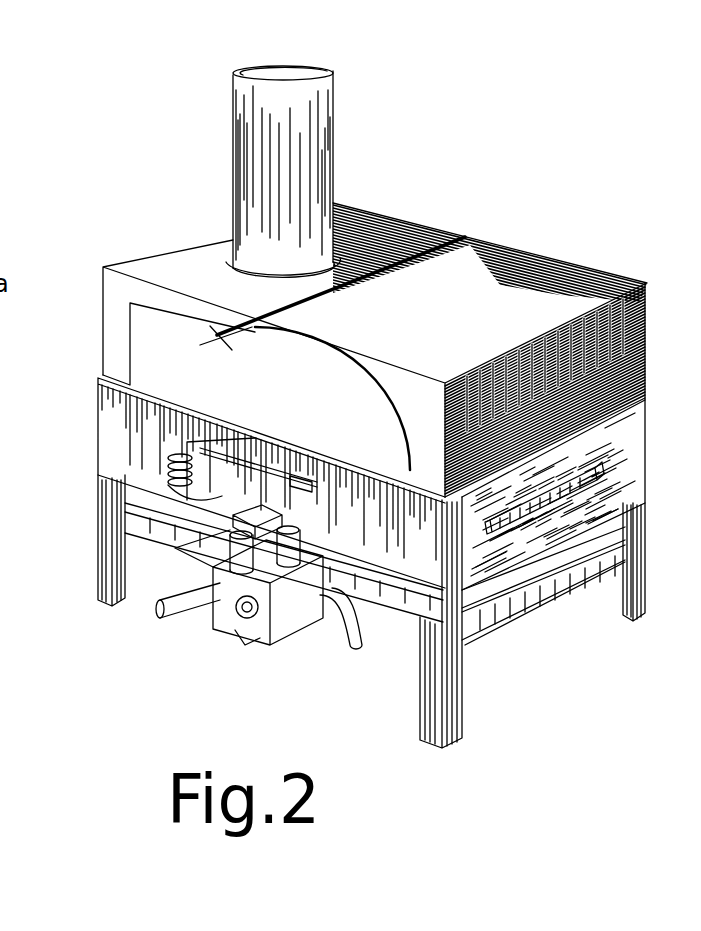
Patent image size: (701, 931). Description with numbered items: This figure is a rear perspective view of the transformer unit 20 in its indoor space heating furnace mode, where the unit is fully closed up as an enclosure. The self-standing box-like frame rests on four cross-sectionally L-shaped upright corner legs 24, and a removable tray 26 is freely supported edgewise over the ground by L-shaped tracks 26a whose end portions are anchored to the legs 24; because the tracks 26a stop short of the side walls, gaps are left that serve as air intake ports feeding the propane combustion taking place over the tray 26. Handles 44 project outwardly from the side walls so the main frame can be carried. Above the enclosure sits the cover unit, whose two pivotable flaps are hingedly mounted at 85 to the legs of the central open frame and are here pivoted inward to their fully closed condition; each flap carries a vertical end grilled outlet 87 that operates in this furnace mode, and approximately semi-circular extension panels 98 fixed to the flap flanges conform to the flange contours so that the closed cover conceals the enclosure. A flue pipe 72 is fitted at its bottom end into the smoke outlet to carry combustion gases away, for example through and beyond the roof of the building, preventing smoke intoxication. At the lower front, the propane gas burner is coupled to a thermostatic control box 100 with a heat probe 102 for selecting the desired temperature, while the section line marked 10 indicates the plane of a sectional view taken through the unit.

The section line 10- 10 is at (397, 183).
The transformer unit 20 is at (548, 612).
The corner legs 24 is at (102, 593).
The removable tray 26 is at (622, 543).
The tracks 26a is at (495, 637).
The handles 44 is at (610, 470).
The flue pipe 72 is at (253, 167).
The hinge mounting 85 is at (643, 393).
The grilled outlet 87 is at (643, 341).
The extension panels 98 is at (140, 322).
The thermostatic control box 100 is at (193, 603).
The heat probe 102 is at (313, 463).